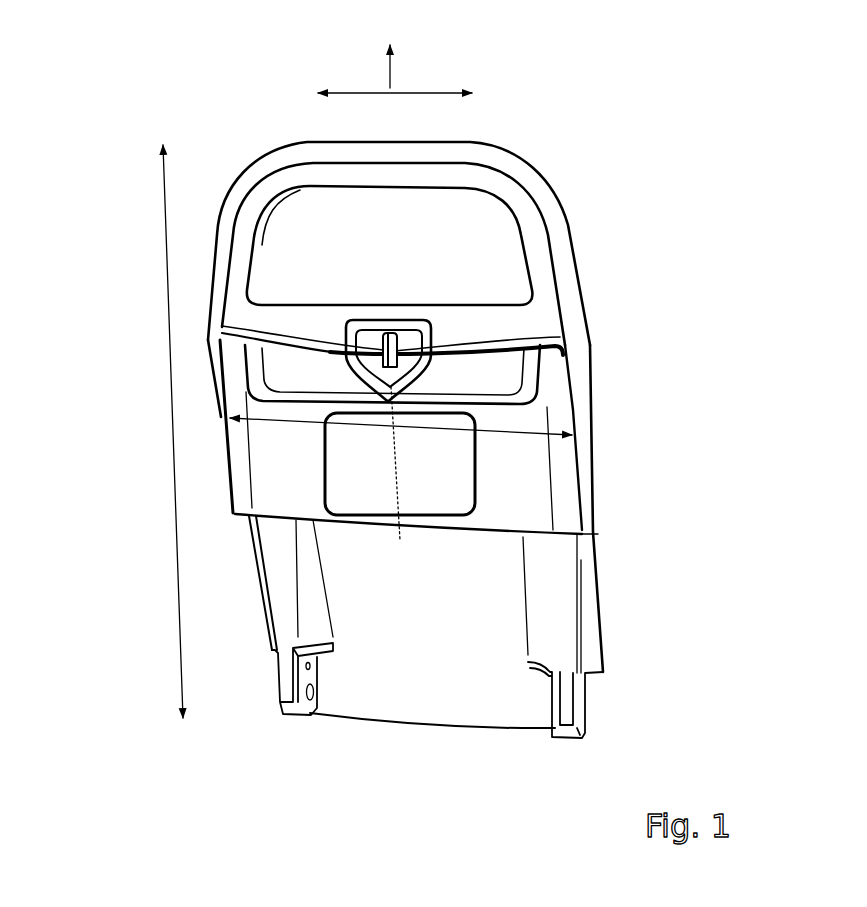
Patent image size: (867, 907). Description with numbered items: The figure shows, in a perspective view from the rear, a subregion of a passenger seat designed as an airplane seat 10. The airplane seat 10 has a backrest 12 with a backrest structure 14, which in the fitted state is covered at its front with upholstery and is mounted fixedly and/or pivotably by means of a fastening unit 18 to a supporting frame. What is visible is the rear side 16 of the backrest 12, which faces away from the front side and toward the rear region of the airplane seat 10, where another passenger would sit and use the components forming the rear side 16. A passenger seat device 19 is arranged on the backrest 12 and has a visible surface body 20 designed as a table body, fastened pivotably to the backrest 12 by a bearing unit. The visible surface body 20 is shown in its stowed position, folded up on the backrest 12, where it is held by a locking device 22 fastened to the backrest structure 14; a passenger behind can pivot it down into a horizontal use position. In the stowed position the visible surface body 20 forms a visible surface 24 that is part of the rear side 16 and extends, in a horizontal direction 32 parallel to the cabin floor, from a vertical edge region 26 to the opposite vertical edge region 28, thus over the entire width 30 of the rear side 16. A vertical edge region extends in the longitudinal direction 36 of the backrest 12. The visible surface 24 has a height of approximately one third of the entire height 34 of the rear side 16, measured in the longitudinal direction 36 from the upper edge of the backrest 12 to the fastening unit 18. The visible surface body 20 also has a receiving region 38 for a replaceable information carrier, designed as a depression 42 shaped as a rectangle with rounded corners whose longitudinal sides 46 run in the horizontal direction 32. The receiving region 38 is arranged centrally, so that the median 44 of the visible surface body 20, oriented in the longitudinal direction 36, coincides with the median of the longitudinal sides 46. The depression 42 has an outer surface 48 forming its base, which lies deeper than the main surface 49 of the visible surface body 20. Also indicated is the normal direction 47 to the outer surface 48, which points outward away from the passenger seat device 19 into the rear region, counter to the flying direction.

The airplane seat 10 is at (590, 119).
The backrest 12 is at (212, 197).
The backrest structure 14 is at (258, 173).
The rear side 16 is at (237, 315).
The fastening unit 18 is at (272, 686).
The passenger seat device 19 is at (597, 357).
The visible surface body 20 is at (553, 488).
The locking device 22 is at (410, 337).
The visible surface 24 is at (272, 435).
The vertical edge region 26 is at (217, 368).
The vertical edge region 28 is at (575, 408).
The width 30 is at (590, 447).
The horizontal direction 32 is at (361, 92).
The height 34 is at (163, 265).
The longitudinal direction 36 is at (391, 63).
The receiving region 38 is at (480, 500).
The depression 42 is at (367, 455).
The median 44 is at (395, 455).
The longitudinal sides 46 is at (453, 398).
The normal direction 47 is at (235, 514).
The outer surface 48 is at (439, 516).
The main surface 49 is at (277, 484).